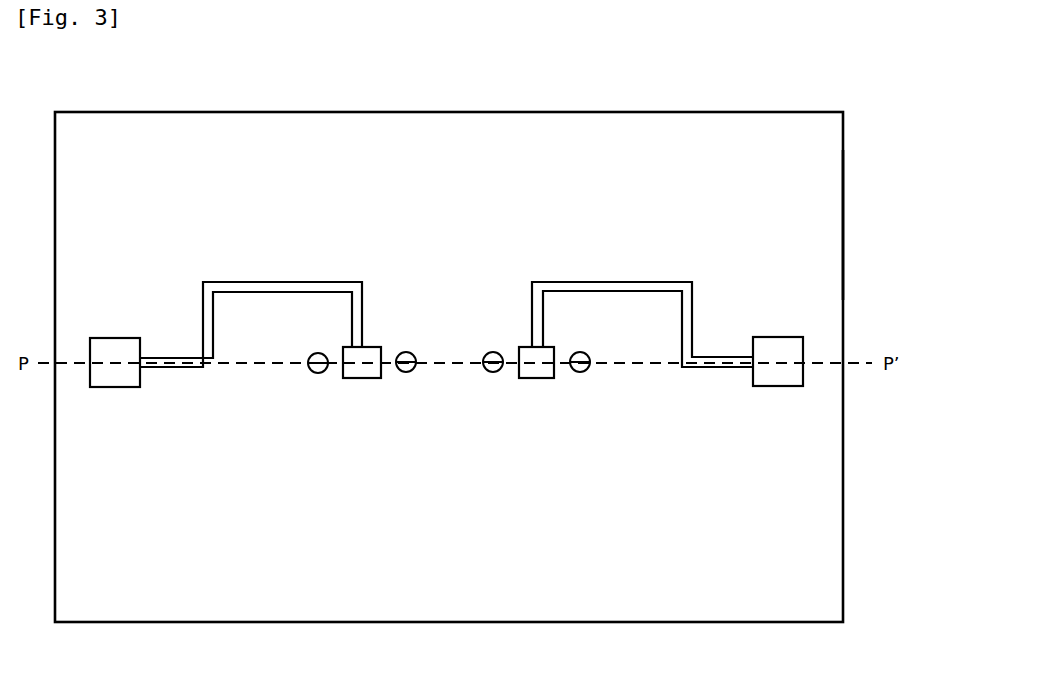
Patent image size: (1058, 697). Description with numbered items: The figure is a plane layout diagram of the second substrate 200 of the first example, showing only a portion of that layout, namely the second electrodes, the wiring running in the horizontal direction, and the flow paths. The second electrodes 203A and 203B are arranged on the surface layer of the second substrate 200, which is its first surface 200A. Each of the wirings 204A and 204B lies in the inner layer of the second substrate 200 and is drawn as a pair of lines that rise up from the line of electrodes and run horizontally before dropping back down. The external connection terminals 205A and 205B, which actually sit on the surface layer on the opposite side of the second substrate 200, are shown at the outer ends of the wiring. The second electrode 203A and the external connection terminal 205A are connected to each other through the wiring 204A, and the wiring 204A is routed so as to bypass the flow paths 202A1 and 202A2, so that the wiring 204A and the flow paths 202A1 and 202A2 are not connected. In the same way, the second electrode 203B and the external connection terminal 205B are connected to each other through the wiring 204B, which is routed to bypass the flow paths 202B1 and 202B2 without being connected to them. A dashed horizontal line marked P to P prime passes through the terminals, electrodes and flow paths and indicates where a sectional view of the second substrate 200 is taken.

The second substrate 200 is at (596, 126).
The first surface 200A is at (803, 220).
The flow path 202A1 is at (314, 373).
The flow path 202A2 is at (406, 352).
The flow path 202B1 is at (493, 352).
The flow path 202B2 is at (580, 373).
The second electrode 203A is at (362, 379).
The second electrode 203B is at (535, 379).
The wiring 204A is at (274, 286).
The wiring 204B is at (610, 286).
The external connection terminal 205A is at (112, 338).
The external connection terminal 205B is at (775, 337).